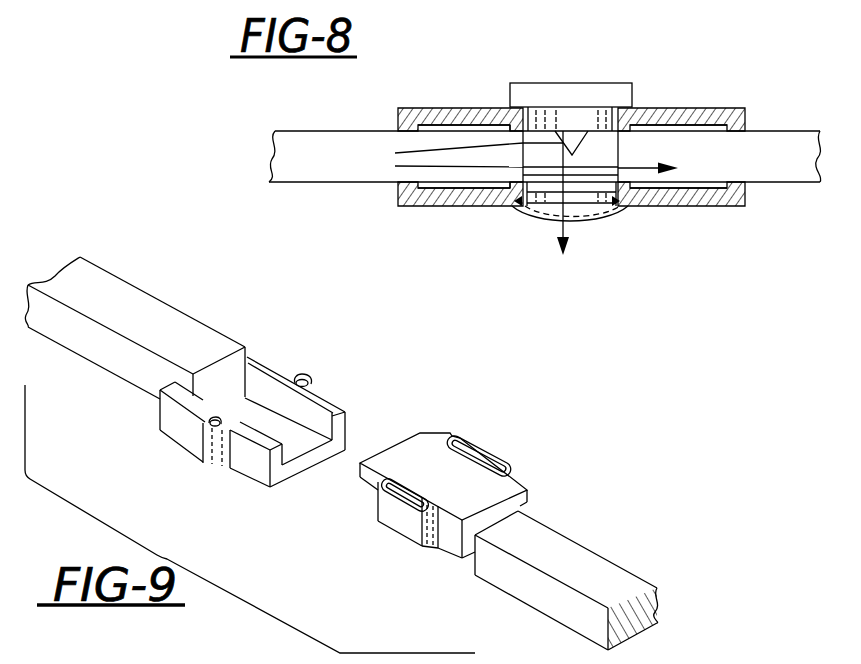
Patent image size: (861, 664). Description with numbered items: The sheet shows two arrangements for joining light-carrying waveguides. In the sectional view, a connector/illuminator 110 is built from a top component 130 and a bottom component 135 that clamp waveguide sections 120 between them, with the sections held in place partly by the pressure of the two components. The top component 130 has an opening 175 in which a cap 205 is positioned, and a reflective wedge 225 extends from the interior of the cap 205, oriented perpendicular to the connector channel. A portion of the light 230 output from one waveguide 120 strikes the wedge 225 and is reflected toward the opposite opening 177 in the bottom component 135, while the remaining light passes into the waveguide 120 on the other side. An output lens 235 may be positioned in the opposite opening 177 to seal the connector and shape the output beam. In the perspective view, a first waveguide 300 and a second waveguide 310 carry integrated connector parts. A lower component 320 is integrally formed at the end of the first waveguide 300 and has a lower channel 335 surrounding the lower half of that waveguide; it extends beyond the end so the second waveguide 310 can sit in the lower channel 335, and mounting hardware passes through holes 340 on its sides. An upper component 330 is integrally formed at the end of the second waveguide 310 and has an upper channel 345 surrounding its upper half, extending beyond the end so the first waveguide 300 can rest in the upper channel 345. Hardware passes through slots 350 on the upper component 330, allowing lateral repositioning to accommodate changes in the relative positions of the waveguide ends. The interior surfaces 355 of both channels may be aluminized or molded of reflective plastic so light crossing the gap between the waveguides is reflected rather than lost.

In FIG. 8, the connector/illuminator 110 is at (432, 107).
In FIG. 8, the waveguide section 120 is at (303, 142).
In FIG. 8, the top component 130 is at (727, 110).
In FIG. 8, the bottom component 135 is at (745, 202).
In FIG. 8, the opening 175 is at (637, 113).
In FIG. 8, the opposite opening 177 is at (622, 212).
In FIG. 8, the cap 205 is at (590, 93).
In FIG. 8, the wedge 225 is at (569, 129).
In FIG. 8, the light 230 is at (395, 153).
In FIG. 8, the output lens 235 is at (592, 218).
In FIG. 9, the first waveguide 300 is at (150, 305).
In FIG. 9, the second waveguide 310 is at (565, 565).
In FIG. 9, the lower component 320 is at (250, 480).
In FIG. 9, the upper component 330 is at (365, 520).
In FIG. 9, the lower channel 335 is at (302, 449).
In FIG. 9, the holes 340 is at (303, 378).
In FIG. 9, the upper channel 345 is at (391, 440).
In FIG. 9, the slots 350 is at (468, 446).
In FIG. 9, the interior surfaces 355 is at (287, 432).